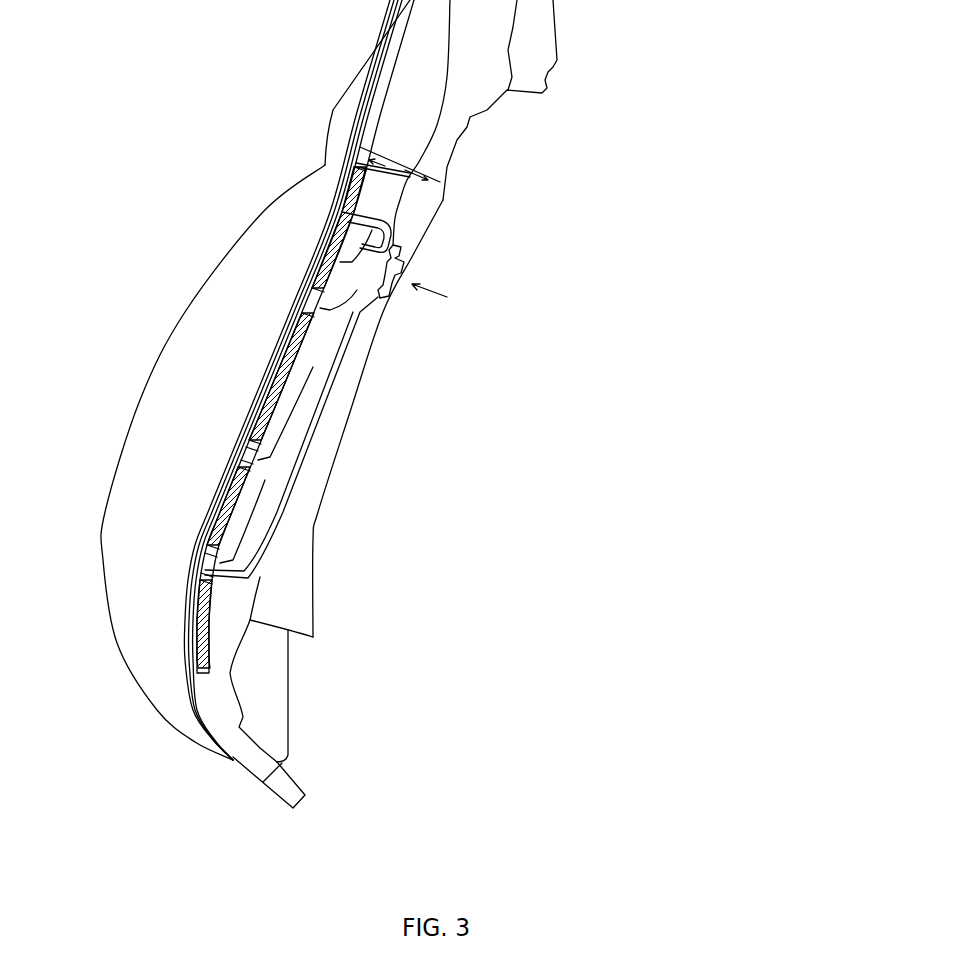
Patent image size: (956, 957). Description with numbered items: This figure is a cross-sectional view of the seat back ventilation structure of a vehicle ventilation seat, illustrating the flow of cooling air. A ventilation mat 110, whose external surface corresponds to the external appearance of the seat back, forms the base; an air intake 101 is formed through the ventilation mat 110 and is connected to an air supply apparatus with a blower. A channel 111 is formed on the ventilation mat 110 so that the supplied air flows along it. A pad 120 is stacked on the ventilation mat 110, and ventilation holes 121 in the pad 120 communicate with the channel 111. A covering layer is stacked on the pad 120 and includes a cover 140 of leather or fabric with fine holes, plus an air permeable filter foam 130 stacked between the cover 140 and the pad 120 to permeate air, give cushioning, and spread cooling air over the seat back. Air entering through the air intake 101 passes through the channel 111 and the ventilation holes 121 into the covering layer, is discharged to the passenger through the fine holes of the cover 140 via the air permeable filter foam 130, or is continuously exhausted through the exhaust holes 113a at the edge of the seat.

The air intake 101 is at (395, 250).
The ventilation mat 110 is at (240, 602).
The channel 111 is at (342, 323).
The exhaust holes of the first group 113a is at (362, 160).
The pad 120 is at (200, 648).
The ventilation holes 121 is at (344, 214).
The air permeable filter foam 130 is at (335, 282).
The cover 140 is at (330, 253).